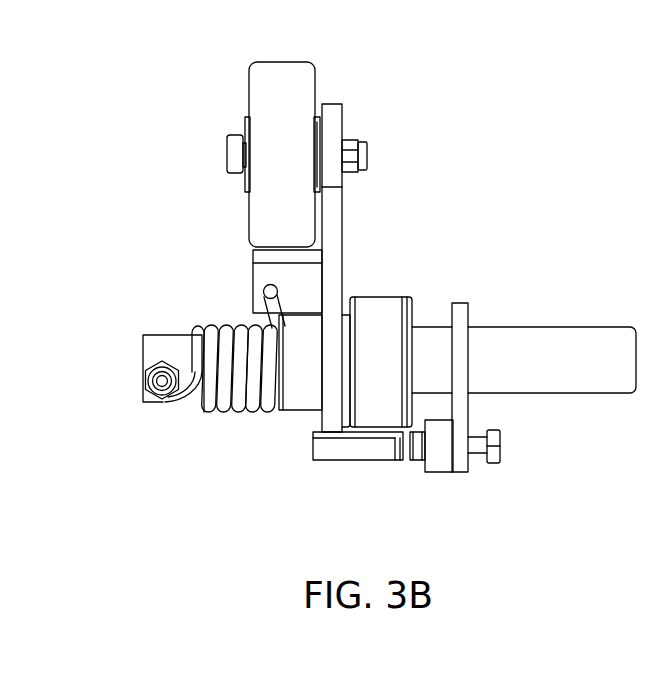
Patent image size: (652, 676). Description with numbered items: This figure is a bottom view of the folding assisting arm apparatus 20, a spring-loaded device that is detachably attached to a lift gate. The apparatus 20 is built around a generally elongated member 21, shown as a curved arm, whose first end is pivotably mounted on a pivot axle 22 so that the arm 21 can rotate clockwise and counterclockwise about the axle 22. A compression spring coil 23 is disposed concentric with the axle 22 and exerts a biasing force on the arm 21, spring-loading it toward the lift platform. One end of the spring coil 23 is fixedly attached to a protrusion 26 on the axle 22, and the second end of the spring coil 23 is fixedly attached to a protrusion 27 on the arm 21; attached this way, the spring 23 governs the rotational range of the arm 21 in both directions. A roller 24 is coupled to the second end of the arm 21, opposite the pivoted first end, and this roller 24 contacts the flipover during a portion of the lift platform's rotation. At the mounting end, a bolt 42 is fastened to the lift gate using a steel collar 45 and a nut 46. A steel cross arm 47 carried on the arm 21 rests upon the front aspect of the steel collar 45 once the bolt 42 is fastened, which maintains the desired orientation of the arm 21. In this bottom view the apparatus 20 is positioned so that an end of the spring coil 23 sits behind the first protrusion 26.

The folding assisting arm apparatus 20 is at (473, 210).
The elongated member 21 is at (328, 210).
The pivot axle 22 is at (162, 345).
The compression spring coil 23 is at (225, 348).
The roller 24 is at (272, 195).
The protrusion 26 is at (152, 383).
The protrusion 27 is at (262, 273).
The bolt 42 is at (477, 453).
The steel collar 45 is at (445, 465).
The nut 46 is at (420, 462).
The steel cross arm 47 is at (322, 450).